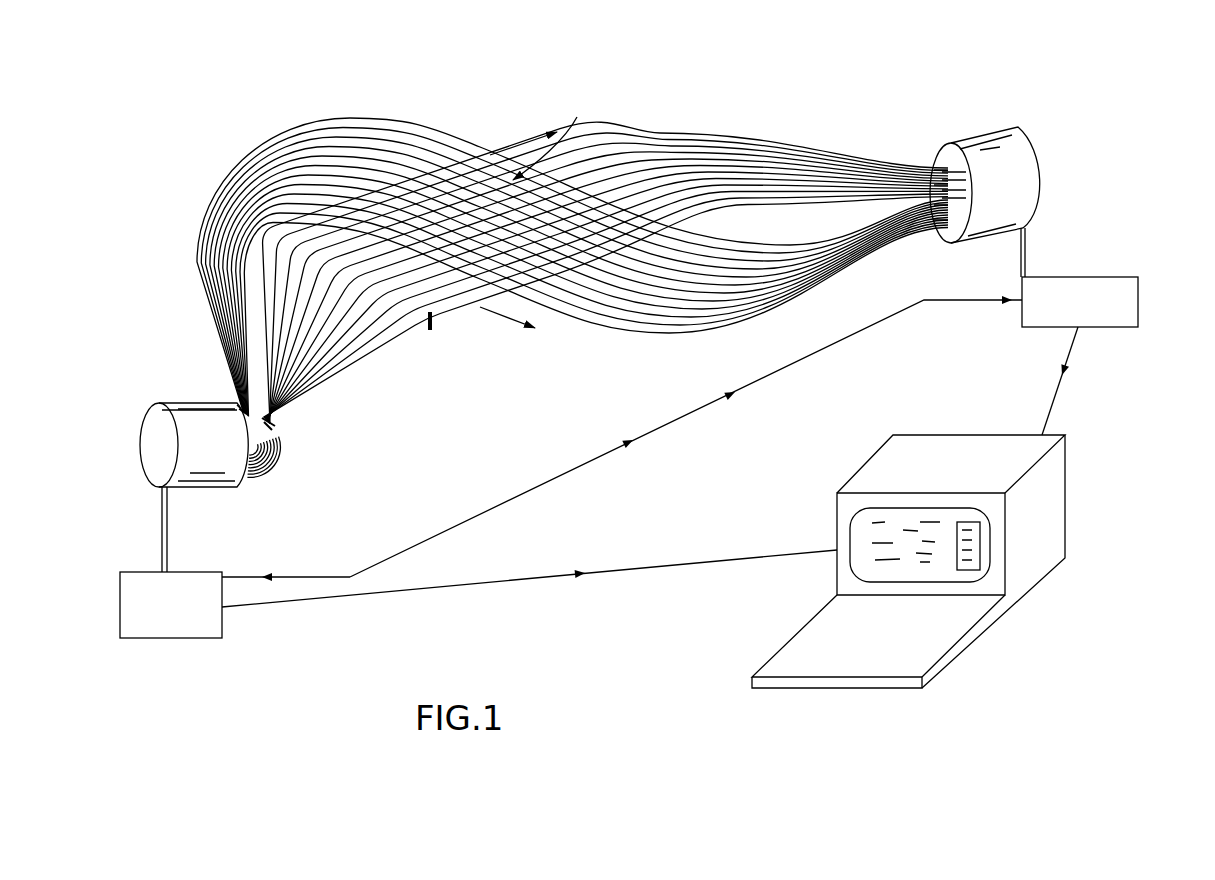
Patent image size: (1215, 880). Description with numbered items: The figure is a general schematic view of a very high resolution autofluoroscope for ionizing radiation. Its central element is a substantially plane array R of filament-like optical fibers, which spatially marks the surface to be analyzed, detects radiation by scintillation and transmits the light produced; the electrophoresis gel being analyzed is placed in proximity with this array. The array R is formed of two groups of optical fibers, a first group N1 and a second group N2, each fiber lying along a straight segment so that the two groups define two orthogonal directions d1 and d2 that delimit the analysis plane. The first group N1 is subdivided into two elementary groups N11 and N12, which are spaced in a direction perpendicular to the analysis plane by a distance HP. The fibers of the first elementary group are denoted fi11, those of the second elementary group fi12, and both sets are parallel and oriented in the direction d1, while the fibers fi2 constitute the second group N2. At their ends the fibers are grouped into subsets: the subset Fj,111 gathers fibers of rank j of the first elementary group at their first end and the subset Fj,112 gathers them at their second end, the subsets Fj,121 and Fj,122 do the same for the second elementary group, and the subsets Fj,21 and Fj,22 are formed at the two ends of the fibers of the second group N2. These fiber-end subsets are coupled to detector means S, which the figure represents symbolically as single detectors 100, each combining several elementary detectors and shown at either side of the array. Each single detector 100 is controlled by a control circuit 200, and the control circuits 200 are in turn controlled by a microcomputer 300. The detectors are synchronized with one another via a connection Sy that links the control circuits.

The first group of optical fibers N1 is at (505, 76).
The first elementary group N11 is at (481, 157).
The second elementary group N12 is at (463, 190).
The second group of optical fibers N2 is at (490, 290).
The optical fibers of the first elementary group fi11 is at (625, 195).
The optical fibers of the second elementary group fi12 is at (603, 205).
The optical fibers of the second group fi2 is at (577, 275).
The first direction d1 is at (523, 127).
The second direction d2 is at (510, 337).
The array R is at (547, 135).
The spacing distance HP is at (430, 332).
The fiber-end subset of rank j at first end of first elementary group Fj,111 is at (935, 166).
The fiber-end subset of rank j at first end of second elementary group Fj,121 is at (965, 178).
The fiber-end subset of rank j at first end of second group Fj,21 is at (932, 228).
The fiber-end subset of rank j at second end of second group Fj,22 is at (240, 403).
The fiber-end subset of rank j at second end of first elementary group Fj,112 is at (278, 430).
The fiber-end subset of rank j at second end of second elementary group Fj,122 is at (263, 478).
The single detector 100 is at (228, 488).
The detector means S is at (192, 478).
The control circuit 200 is at (170, 638).
The microcomputer 300 is at (1065, 503).
The synchronization connection Sy is at (650, 451).